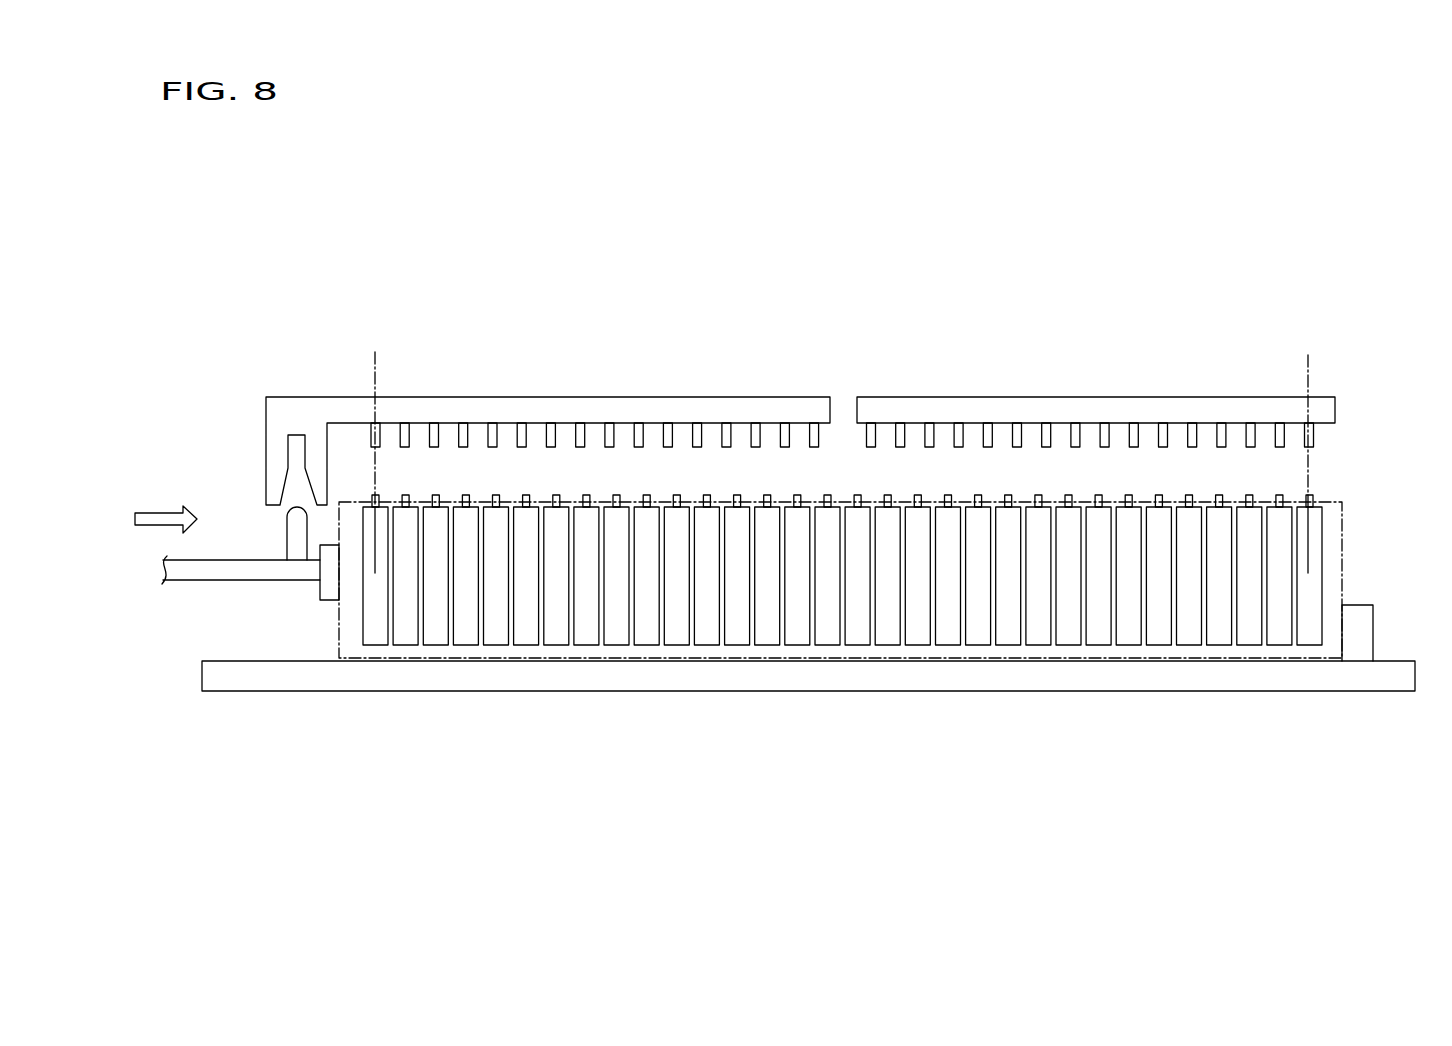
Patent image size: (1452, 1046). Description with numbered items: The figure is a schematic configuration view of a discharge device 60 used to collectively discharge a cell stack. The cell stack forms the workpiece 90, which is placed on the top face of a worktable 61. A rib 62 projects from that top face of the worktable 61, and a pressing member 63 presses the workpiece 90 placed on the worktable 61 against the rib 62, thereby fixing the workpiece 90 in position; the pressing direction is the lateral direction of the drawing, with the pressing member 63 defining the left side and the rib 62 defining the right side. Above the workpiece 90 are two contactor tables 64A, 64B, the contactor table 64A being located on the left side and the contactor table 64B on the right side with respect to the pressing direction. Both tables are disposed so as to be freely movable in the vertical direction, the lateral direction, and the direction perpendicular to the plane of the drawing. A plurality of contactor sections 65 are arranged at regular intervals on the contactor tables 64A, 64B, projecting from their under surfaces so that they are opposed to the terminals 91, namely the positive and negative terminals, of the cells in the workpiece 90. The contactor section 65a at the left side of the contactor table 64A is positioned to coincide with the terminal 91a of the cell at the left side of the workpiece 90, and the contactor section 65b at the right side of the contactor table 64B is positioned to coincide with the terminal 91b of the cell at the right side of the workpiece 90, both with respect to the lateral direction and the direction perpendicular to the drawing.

The discharge device 60 is at (811, 242).
The worktable 61 is at (782, 680).
The rib 62 is at (1362, 628).
The pressing member 63 is at (238, 570).
The contactor table 64A is at (798, 415).
The contactor table 64B is at (893, 408).
The contactor section 65 is at (867, 437).
The contactor section 65a is at (370, 433).
The contactor section 65b is at (1313, 440).
The workpiece 90 is at (1342, 545).
The terminal 91 is at (797, 495).
The terminal 91a is at (375, 493).
The terminal 91b is at (1312, 500).